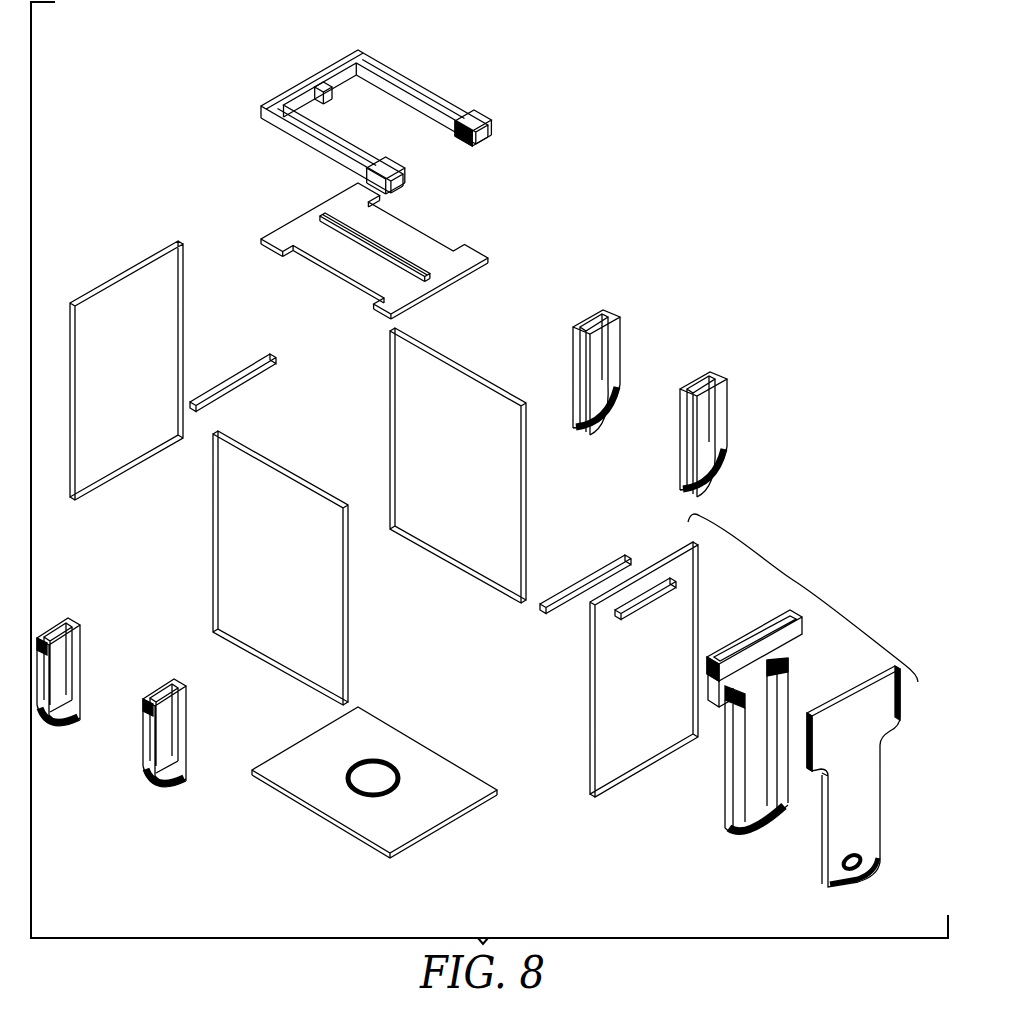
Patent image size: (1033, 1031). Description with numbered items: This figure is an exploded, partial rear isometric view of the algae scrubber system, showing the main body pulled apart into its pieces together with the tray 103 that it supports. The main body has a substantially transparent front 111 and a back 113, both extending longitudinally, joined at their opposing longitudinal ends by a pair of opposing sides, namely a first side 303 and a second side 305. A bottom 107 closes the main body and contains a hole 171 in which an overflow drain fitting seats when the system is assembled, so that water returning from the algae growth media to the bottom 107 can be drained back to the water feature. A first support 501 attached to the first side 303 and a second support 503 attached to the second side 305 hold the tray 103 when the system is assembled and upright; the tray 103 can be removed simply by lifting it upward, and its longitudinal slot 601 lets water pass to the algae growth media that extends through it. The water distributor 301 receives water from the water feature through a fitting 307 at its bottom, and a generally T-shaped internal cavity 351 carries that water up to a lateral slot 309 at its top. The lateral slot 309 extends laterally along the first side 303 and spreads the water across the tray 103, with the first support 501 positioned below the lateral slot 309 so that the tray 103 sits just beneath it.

The tray 103 is at (497, 105).
The longitudinal slot 601 is at (336, 222).
The second side 305 is at (95, 328).
The second support 503 is at (230, 377).
The front 111 is at (462, 400).
The back 113 is at (237, 548).
The bottom 107 is at (287, 777).
The hole 171 is at (375, 774).
The first support 501 is at (583, 574).
The lateral slot 309 is at (660, 588).
The first side 303 is at (607, 762).
The water distributor 301 is at (793, 580).
The internal cavity 351 is at (760, 758).
The fitting 307 is at (865, 856).